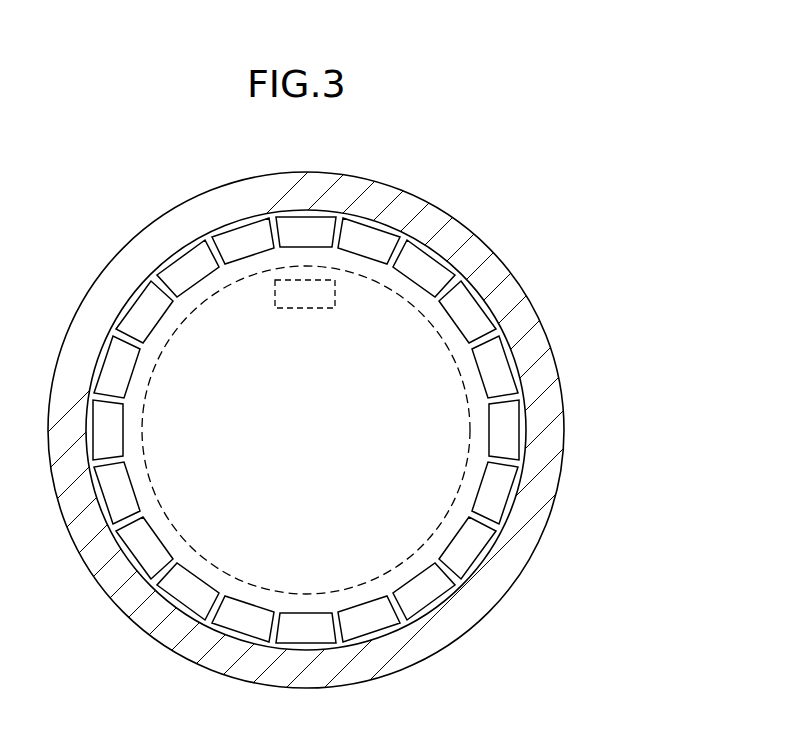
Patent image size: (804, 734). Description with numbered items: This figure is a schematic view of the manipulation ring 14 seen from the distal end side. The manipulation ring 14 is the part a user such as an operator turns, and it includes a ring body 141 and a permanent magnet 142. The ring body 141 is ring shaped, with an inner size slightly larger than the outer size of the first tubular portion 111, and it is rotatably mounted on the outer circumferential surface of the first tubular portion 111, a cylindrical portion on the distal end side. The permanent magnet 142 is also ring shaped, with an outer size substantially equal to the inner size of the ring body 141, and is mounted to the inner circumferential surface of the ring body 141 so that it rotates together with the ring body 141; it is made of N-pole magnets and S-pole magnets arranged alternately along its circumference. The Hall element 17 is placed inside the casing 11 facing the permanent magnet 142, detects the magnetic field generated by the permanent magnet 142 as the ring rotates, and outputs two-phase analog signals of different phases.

The manipulation ring 14 is at (402, 430).
The ring body 141 is at (458, 237).
The permanent magnet 142 is at (391, 228).
The Hall element 17 is at (289, 278).
The first tubular portion 111 is at (472, 436).
The casing 11 is at (412, 430).